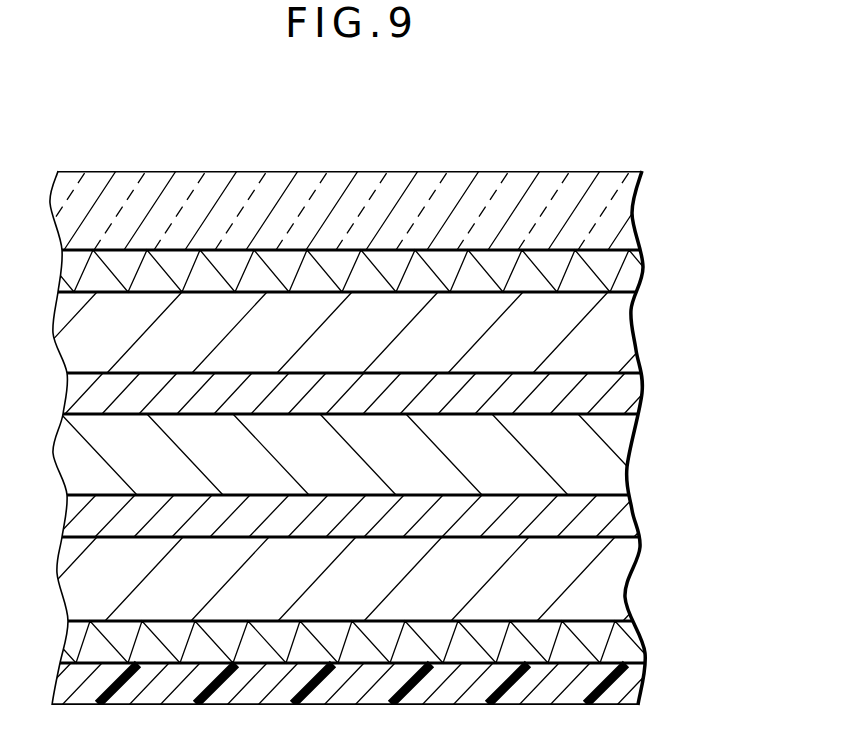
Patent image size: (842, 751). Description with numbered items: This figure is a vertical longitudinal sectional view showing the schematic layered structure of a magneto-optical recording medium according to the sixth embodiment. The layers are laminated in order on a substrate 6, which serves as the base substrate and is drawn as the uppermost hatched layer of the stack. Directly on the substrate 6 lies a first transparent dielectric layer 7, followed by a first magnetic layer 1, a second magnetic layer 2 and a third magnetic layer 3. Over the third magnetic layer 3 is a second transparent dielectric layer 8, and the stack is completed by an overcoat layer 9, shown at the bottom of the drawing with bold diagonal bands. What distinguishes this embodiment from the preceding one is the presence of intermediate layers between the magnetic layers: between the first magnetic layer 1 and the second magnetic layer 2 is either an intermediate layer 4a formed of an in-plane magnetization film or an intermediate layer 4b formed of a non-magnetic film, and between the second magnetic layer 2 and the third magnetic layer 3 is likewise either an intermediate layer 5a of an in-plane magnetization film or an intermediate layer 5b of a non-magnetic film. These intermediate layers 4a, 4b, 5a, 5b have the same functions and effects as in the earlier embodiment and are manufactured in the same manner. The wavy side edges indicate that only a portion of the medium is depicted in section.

The first magnetic layer 1 is at (612, 332).
The second magnetic layer 2 is at (618, 441).
The third magnetic layer 3 is at (615, 577).
The intermediate layer of an in-plane magnetization film 4a is at (406, 393).
The intermediate layer of a non-magnetic film 4b is at (628, 392).
The intermediate layer of an in-plane magnetization film 5a is at (403, 516).
The intermediate layer of a non-magnetic film 5b is at (622, 516).
The substrate 6 is at (620, 203).
The first transparent dielectric layer 7 is at (620, 271).
The second transparent dielectric layer 8 is at (625, 636).
The overcoat layer 9 is at (627, 684).